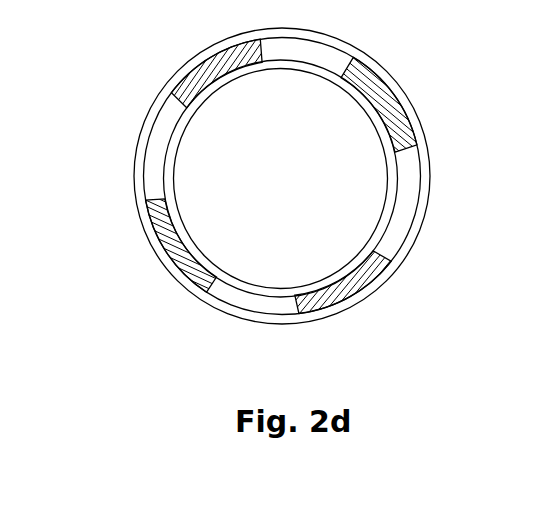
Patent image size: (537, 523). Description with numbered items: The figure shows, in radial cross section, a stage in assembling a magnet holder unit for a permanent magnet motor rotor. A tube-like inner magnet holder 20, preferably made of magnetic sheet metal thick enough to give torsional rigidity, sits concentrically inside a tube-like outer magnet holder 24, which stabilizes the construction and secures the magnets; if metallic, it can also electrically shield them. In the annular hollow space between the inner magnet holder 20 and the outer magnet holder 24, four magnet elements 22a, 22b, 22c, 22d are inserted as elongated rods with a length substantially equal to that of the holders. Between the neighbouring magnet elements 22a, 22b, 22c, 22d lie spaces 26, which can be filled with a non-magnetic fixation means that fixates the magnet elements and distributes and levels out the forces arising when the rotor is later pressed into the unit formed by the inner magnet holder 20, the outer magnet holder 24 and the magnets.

The inner magnet holder 20 is at (277, 63).
The outer magnet holder 24 is at (232, 313).
The magnet element 22a is at (178, 100).
The magnet element 22b is at (400, 102).
The magnet element 22c is at (180, 272).
The magnet element 22d is at (372, 263).
The spaces 26 is at (157, 168).